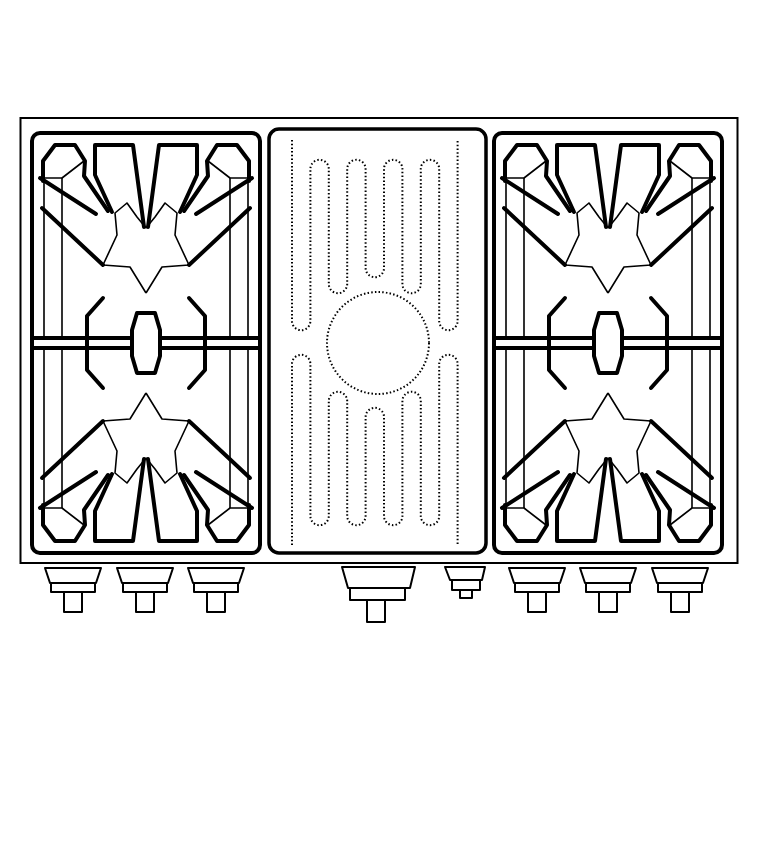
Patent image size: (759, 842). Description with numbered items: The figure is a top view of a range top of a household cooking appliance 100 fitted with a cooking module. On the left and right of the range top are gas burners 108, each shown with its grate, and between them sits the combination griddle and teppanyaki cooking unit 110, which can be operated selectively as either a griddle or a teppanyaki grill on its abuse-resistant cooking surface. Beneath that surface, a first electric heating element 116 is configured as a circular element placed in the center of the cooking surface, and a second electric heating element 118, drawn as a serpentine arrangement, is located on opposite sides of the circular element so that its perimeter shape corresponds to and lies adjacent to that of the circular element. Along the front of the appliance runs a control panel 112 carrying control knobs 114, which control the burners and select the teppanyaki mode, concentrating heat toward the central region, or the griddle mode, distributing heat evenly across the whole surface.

The household cooking appliance 100 is at (53, 797).
The gas burners 108 is at (147, 142).
The combination griddle and teppanyaki cooking unit 110 is at (447, 140).
The control panel 112 is at (323, 568).
The control knobs 114 is at (541, 613).
The first electric heating element 116 is at (405, 378).
The second electric heating element 118 is at (357, 160).